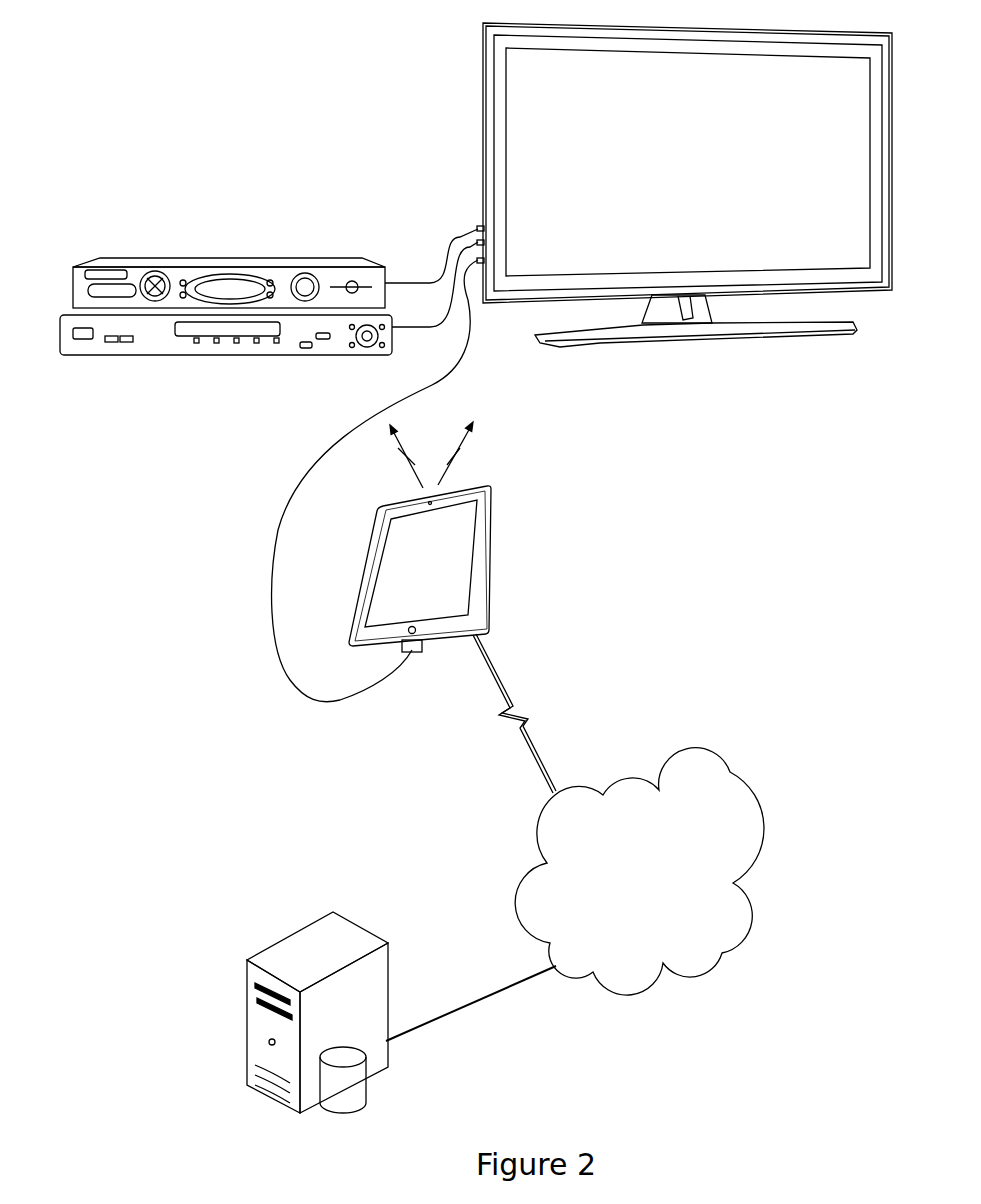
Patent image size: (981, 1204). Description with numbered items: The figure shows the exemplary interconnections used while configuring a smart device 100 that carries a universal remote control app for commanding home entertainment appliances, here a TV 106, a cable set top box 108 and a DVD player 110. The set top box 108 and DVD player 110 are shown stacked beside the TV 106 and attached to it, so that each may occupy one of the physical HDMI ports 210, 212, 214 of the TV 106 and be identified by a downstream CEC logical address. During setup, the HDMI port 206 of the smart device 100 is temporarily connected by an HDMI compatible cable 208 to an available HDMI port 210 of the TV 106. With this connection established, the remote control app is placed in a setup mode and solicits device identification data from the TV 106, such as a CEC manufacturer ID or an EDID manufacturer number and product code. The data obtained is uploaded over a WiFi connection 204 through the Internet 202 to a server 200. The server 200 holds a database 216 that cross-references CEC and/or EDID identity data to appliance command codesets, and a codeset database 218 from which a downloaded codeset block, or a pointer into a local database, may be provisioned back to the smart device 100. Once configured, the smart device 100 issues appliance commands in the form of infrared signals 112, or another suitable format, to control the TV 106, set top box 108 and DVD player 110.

The smart device 100 is at (487, 633).
The TV 106 is at (480, 97).
The set top box 108 is at (292, 255).
The DVD player 110 is at (265, 358).
The infrared signals 112 is at (420, 477).
The server 200 is at (297, 932).
The Internet 202 is at (705, 748).
The WiFi connection 204 is at (512, 730).
The HDMI port 206 is at (418, 652).
The HDMI compatible cable 208 is at (318, 708).
The HDMI port 210 is at (481, 261).
The HDMI port 212 is at (481, 242).
The HDMI port 214 is at (481, 229).
The database 216 is at (408, 1080).
The codeset database 218 is at (376, 1090).